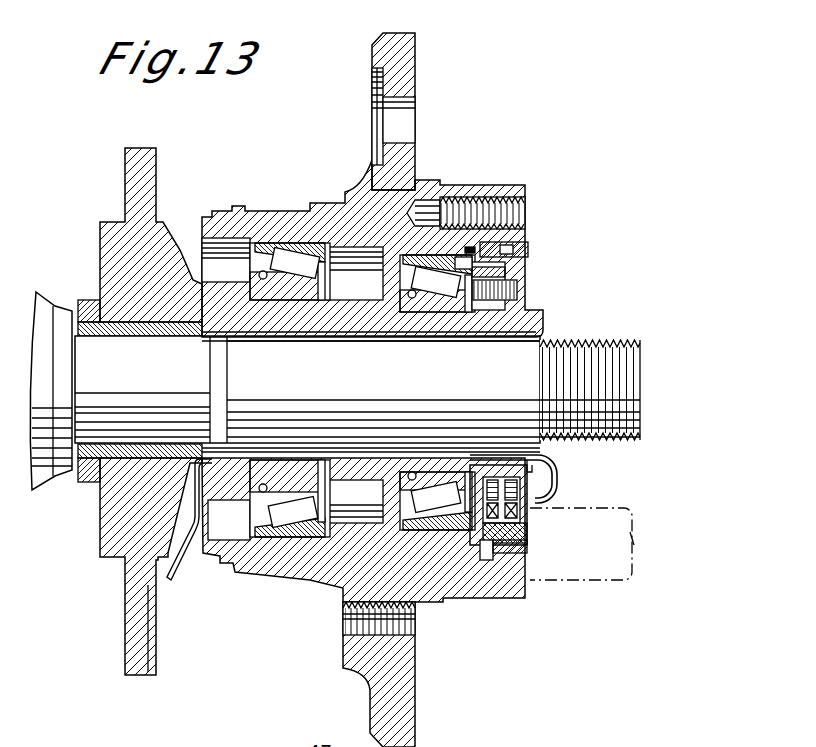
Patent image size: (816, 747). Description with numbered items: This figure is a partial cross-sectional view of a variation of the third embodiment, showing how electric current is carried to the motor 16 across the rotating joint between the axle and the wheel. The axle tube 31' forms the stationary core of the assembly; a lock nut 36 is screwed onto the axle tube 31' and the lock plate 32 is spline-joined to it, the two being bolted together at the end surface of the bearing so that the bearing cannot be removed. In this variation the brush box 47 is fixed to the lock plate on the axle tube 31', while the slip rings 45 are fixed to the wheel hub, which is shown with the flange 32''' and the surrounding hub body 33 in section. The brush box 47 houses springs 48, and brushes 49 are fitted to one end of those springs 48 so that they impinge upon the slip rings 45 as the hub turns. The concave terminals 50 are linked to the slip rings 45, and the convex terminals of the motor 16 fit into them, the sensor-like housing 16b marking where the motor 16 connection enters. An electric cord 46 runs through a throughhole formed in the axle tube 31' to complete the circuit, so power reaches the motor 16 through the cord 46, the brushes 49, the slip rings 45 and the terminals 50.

The axle tube 31' is at (125, 232).
The spindle flange 32''' is at (438, 101).
The slip rings 45 is at (527, 253).
The lock nut 36 is at (497, 303).
The lock plate 32 is at (420, 381).
The brush box 47 is at (623, 421).
The springs 48 is at (525, 490).
The motor 16 is at (636, 537).
The brushes 49 is at (527, 542).
The concave terminals 50 is at (500, 553).
The sensor housing 16b is at (559, 575).
The electric cord 46 is at (170, 580).
The shaft 33 is at (160, 473).